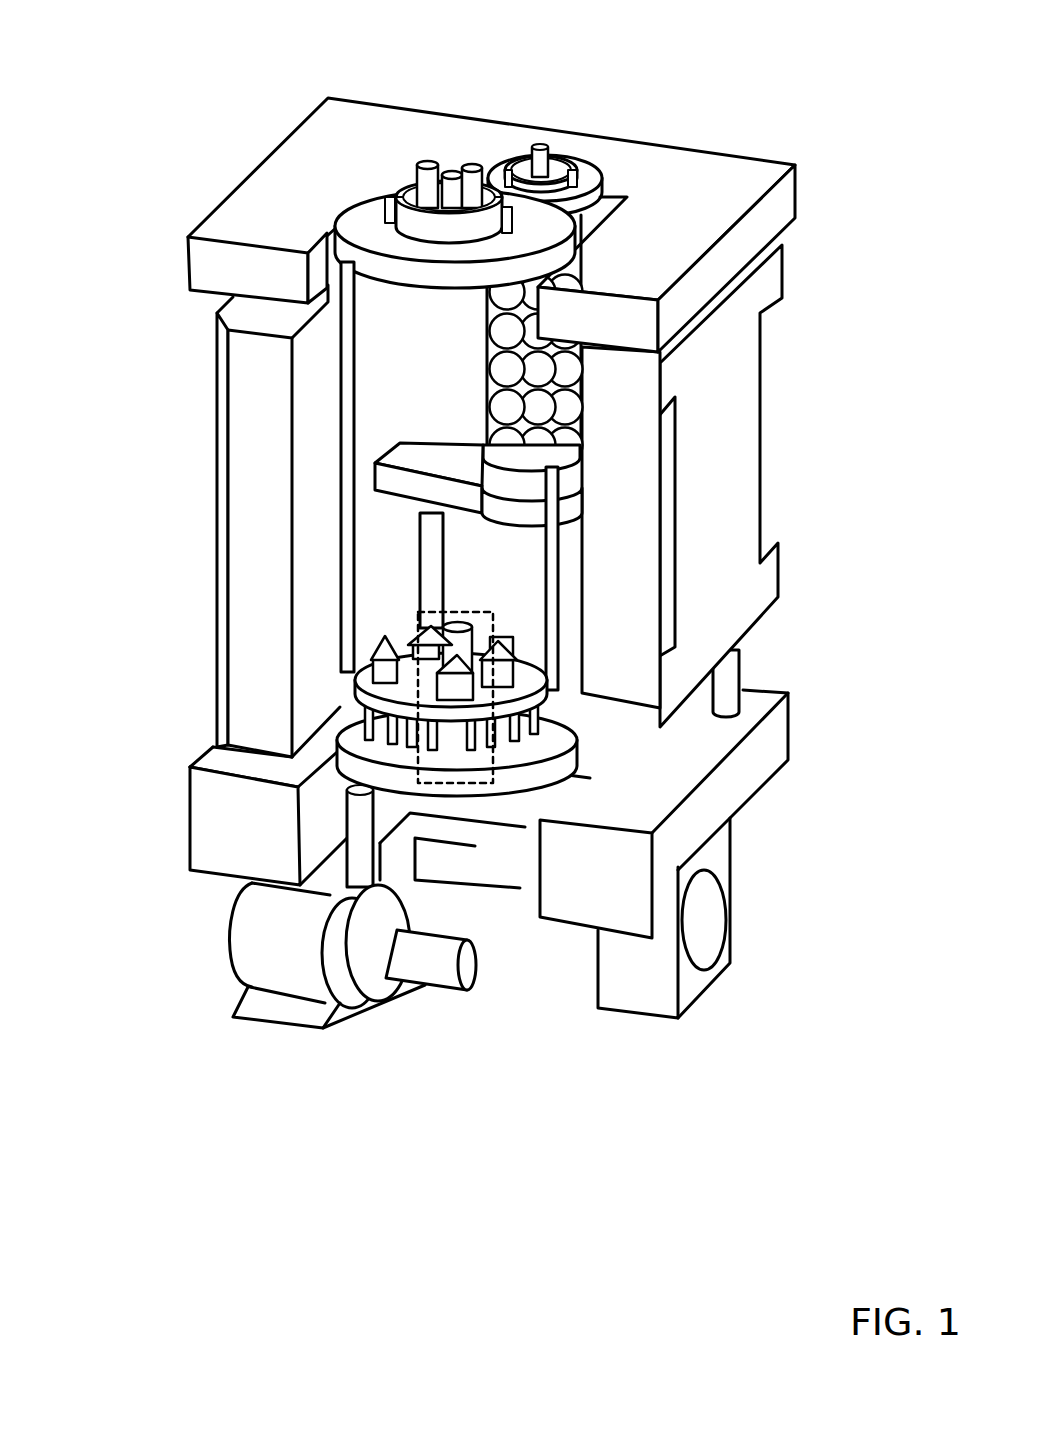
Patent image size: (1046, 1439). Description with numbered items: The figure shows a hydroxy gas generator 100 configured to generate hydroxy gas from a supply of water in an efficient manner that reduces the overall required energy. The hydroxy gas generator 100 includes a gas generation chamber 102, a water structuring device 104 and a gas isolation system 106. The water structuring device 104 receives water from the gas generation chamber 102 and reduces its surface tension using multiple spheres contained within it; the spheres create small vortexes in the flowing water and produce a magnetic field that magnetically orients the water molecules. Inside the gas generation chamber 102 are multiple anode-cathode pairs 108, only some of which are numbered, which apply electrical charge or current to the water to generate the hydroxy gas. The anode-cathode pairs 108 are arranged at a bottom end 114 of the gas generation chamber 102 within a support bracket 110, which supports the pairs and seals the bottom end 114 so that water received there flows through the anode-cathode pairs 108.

The hydroxy gas generator 100 is at (110, 87).
The gas generation chamber 102 is at (488, 348).
The water structuring device 104 is at (528, 412).
The gas isolation system 106 is at (603, 468).
The anode-cathode pairs 108 is at (493, 772).
The support bracket 110 is at (393, 682).
The bottom end 114 is at (368, 638).